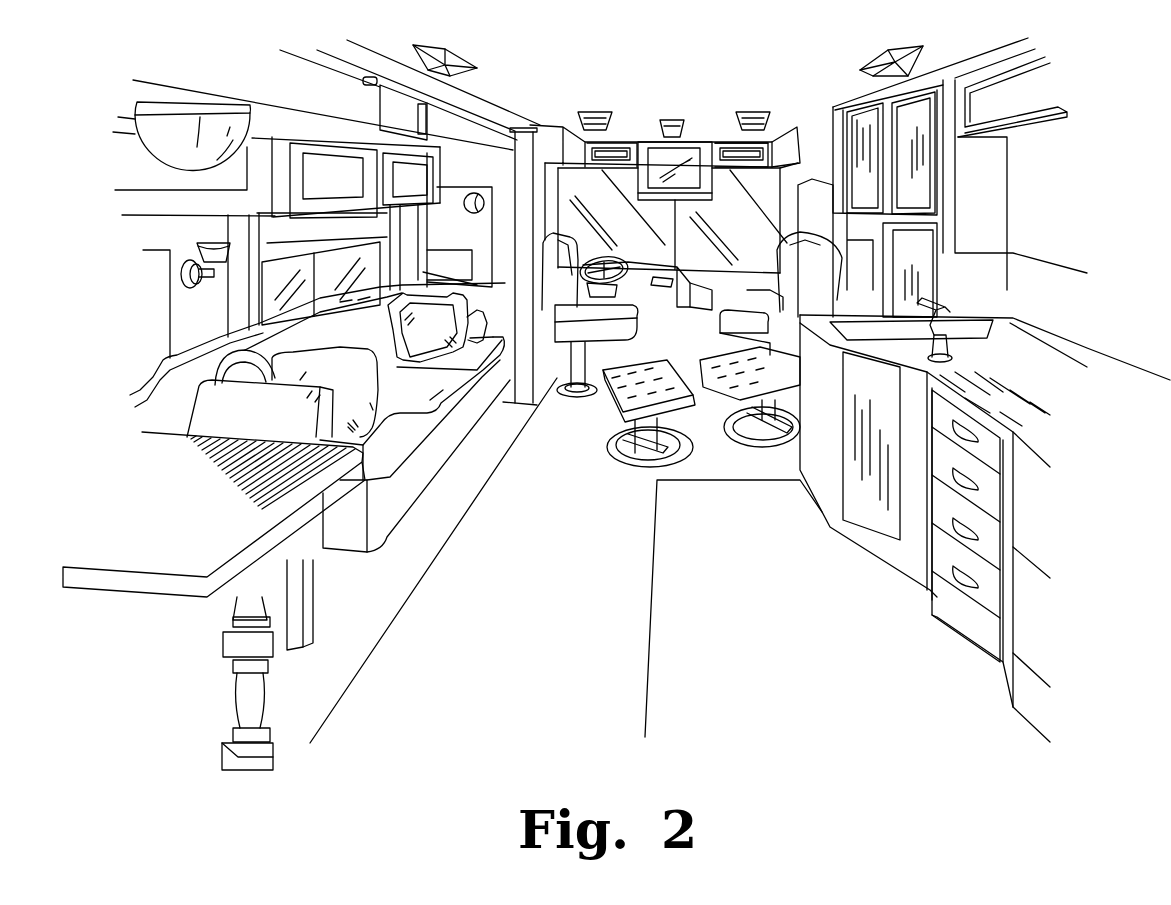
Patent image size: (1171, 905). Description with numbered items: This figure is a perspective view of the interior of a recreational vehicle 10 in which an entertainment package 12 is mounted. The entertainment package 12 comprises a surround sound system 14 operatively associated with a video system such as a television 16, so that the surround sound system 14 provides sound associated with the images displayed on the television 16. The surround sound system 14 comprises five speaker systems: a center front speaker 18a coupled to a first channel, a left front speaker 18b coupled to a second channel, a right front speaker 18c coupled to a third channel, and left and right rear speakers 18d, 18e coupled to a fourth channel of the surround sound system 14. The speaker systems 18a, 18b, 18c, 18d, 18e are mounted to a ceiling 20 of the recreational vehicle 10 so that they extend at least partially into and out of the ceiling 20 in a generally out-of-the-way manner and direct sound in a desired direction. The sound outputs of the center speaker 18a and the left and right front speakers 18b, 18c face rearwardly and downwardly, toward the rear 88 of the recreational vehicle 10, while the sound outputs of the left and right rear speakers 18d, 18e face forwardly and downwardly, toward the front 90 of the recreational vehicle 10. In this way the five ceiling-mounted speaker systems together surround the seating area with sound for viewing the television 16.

The recreational vehicle 10 is at (1048, 184).
The entertainment package 12 is at (665, 115).
The surround sound system 14 is at (775, 88).
The television 16 is at (642, 128).
The center front speaker 18a is at (672, 118).
The left front speaker 18b is at (590, 110).
The right front speaker 18c is at (752, 112).
The left rear speaker 18d is at (477, 72).
The right rear speaker 18e is at (862, 66).
The ceiling 20 is at (787, 115).
The rear 88 is at (571, 635).
The front 90 is at (548, 422).